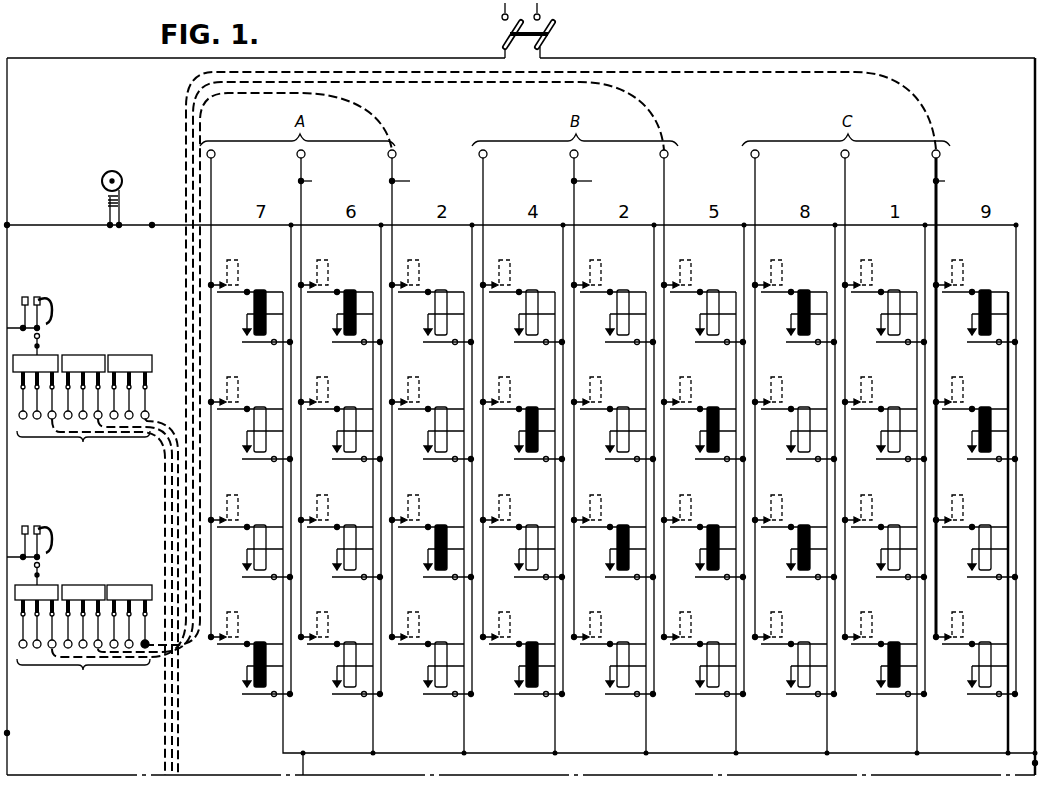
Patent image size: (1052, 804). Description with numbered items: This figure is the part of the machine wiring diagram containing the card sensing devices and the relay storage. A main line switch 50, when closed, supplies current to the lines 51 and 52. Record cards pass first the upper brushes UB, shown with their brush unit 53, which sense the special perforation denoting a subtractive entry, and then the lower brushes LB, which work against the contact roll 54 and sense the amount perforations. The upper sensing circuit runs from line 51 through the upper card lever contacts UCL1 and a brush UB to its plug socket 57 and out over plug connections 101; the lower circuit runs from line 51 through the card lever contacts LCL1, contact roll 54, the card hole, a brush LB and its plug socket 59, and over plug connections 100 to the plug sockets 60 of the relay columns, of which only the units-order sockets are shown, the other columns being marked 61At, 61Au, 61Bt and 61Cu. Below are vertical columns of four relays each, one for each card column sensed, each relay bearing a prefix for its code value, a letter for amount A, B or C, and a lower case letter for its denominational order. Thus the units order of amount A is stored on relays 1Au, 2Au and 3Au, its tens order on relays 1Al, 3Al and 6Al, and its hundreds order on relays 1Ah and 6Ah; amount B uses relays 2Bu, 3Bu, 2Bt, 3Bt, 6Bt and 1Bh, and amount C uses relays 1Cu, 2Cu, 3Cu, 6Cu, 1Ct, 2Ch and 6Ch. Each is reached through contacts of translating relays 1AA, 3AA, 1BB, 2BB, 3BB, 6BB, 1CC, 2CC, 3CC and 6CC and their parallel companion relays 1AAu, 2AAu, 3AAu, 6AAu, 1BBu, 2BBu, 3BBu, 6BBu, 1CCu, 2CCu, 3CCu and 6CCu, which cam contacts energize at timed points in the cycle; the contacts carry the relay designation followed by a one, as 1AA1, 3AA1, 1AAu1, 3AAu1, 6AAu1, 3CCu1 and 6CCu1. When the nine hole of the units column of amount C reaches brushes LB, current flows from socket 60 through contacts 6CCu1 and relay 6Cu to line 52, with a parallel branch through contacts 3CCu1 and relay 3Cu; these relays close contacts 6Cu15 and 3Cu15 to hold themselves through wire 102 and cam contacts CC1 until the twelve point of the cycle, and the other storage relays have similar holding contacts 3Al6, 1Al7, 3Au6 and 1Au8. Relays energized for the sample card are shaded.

The main line switch 50 is at (546, 17).
The line 51 is at (421, 58).
The line 52 is at (680, 58).
The upper contact block set 53 is at (92, 363).
The contact roll 54 is at (88, 592).
The plug socket 57 is at (83, 448).
The plug socket 59 is at (83, 676).
The plug socket 60 is at (959, 153).
The tap conductor 61At is at (322, 181).
The tap conductor 61Au is at (418, 181).
The tap conductor 61Bt is at (599, 181).
The tap conductor 61Cu is at (957, 182).
The plug connection 100 is at (326, 64).
The plug connection 101 is at (172, 727).
The wire 102 is at (152, 225).
The cam contacts CC1 is at (108, 210).
The upper card lever contacts UCL1 is at (27, 300).
The card lever contacts LCL1 is at (27, 529).
The upper brushes UB is at (98, 396).
The lower brushes LB is at (93, 627).
The storage relay 6Ah is at (240, 312).
The translating relay 3AA is at (251, 415).
The translating relay 1AA is at (250, 650).
The storage relay 1Ah is at (236, 666).
The storage relay 6Al is at (330, 312).
The relay contacts 3AA1 is at (341, 409).
The storage relay 3Al is at (330, 429).
The holding contacts 3Al6 is at (320, 449).
The relay contacts 1AA1 is at (341, 644).
The storage relay 1Al is at (330, 664).
The holding contacts 1Al7 is at (319, 684).
The companion translating relay 6AAu is at (432, 291).
The relay contacts 6AAu1 is at (415, 259).
The companion translating relay 3AAu is at (432, 416).
The relay contacts 3AAu1 is at (415, 376).
The storage relay 3Au is at (421, 429).
The holding contacts 3Au6 is at (415, 466).
The companion translating relay 2AAu is at (432, 533).
The storage relay 2Au is at (421, 547).
The companion translating relay 1AAu is at (429, 655).
The relay contacts 1AAu1 is at (415, 611).
The storage relay 1Au is at (421, 664).
The holding contacts 1Au8 is at (405, 705).
The translating relay 6BB is at (523, 298).
The translating relay 3BB is at (523, 415).
The translating relay 2BB is at (523, 533).
The translating relay 1BB is at (523, 650).
The storage relay 1Bh is at (512, 664).
The storage relay 6Bt is at (614, 298).
The storage relay 3Bt is at (614, 415).
The storage relay 2Bt is at (614, 533).
The companion translating relay 6BBu is at (704, 298).
The companion translating relay 3BBu is at (704, 415).
The storage relay 3Bu is at (693, 429).
The companion translating relay 2BBu is at (704, 533).
The storage relay 2Bu is at (693, 547).
The companion translating relay 1BBu is at (704, 650).
The translating relay 6CC is at (795, 298).
The storage relay 6Ch is at (784, 312).
The translating relay 3CC is at (795, 415).
The translating relay 2CC is at (795, 533).
The storage relay 2Ch is at (784, 547).
The translating relay 1CC is at (795, 650).
The relay contacts 3CCu1 is at (890, 410).
The storage relay 1Ct is at (885, 650).
The companion translating relay 6CCu is at (976, 301).
The relay contacts 6CCu1 is at (959, 259).
The storage relay 6Cu is at (965, 312).
The holding contacts 6Cu15 is at (975, 351).
The companion translating relay 3CCu is at (976, 425).
The storage relay 3Cu is at (965, 429).
The holding contacts 3Cu15 is at (971, 468).
The companion translating relay 2CCu is at (976, 533).
The storage relay 2Cu is at (965, 547).
The companion translating relay 1CCu is at (976, 650).
The storage relay 1Cu is at (965, 664).